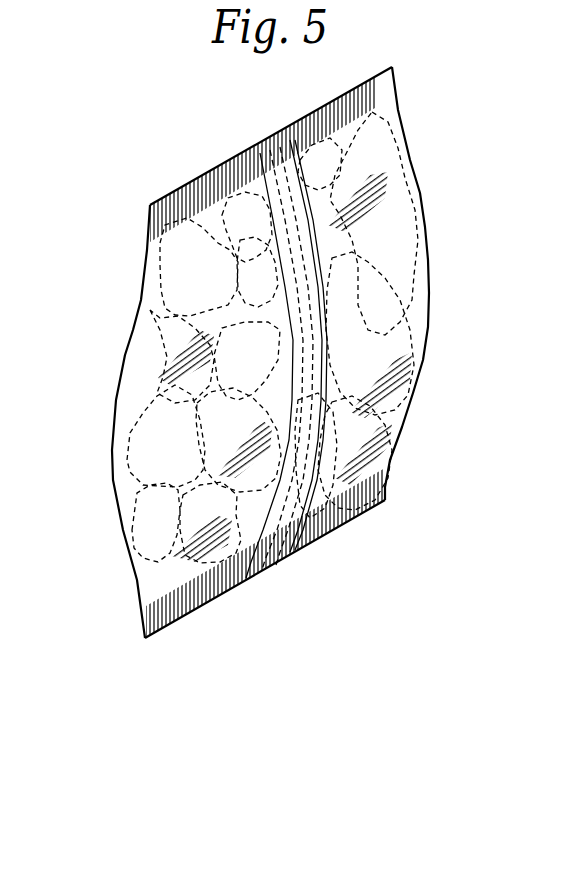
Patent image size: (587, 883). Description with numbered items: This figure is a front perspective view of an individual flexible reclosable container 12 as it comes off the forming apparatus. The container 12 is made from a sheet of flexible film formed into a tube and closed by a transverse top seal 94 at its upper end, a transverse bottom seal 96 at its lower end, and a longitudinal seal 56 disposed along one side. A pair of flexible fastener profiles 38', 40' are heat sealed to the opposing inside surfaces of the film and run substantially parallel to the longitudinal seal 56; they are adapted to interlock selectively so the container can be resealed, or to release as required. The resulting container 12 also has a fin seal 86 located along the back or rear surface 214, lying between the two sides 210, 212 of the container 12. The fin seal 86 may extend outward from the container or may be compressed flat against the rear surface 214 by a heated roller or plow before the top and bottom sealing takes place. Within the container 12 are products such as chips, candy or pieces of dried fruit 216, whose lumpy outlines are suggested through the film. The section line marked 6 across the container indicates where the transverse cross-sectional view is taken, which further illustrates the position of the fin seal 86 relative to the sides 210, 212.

The flexible reclosable container 12 is at (426, 426).
The side of container 210 is at (126, 357).
The side of container 212 is at (421, 199).
The transverse top seal 94 is at (268, 137).
The transverse bottom seal 96 is at (260, 578).
The longitudinal seal 56 is at (303, 357).
The fin seal 86 is at (307, 337).
The fastener profile 38' is at (199, 267).
The fastener profile 40' is at (374, 223).
The rear surface 214 is at (277, 413).
The pieces of dried fruit 216 is at (153, 473).
The section line of FIG. 6 is at (267, 372).